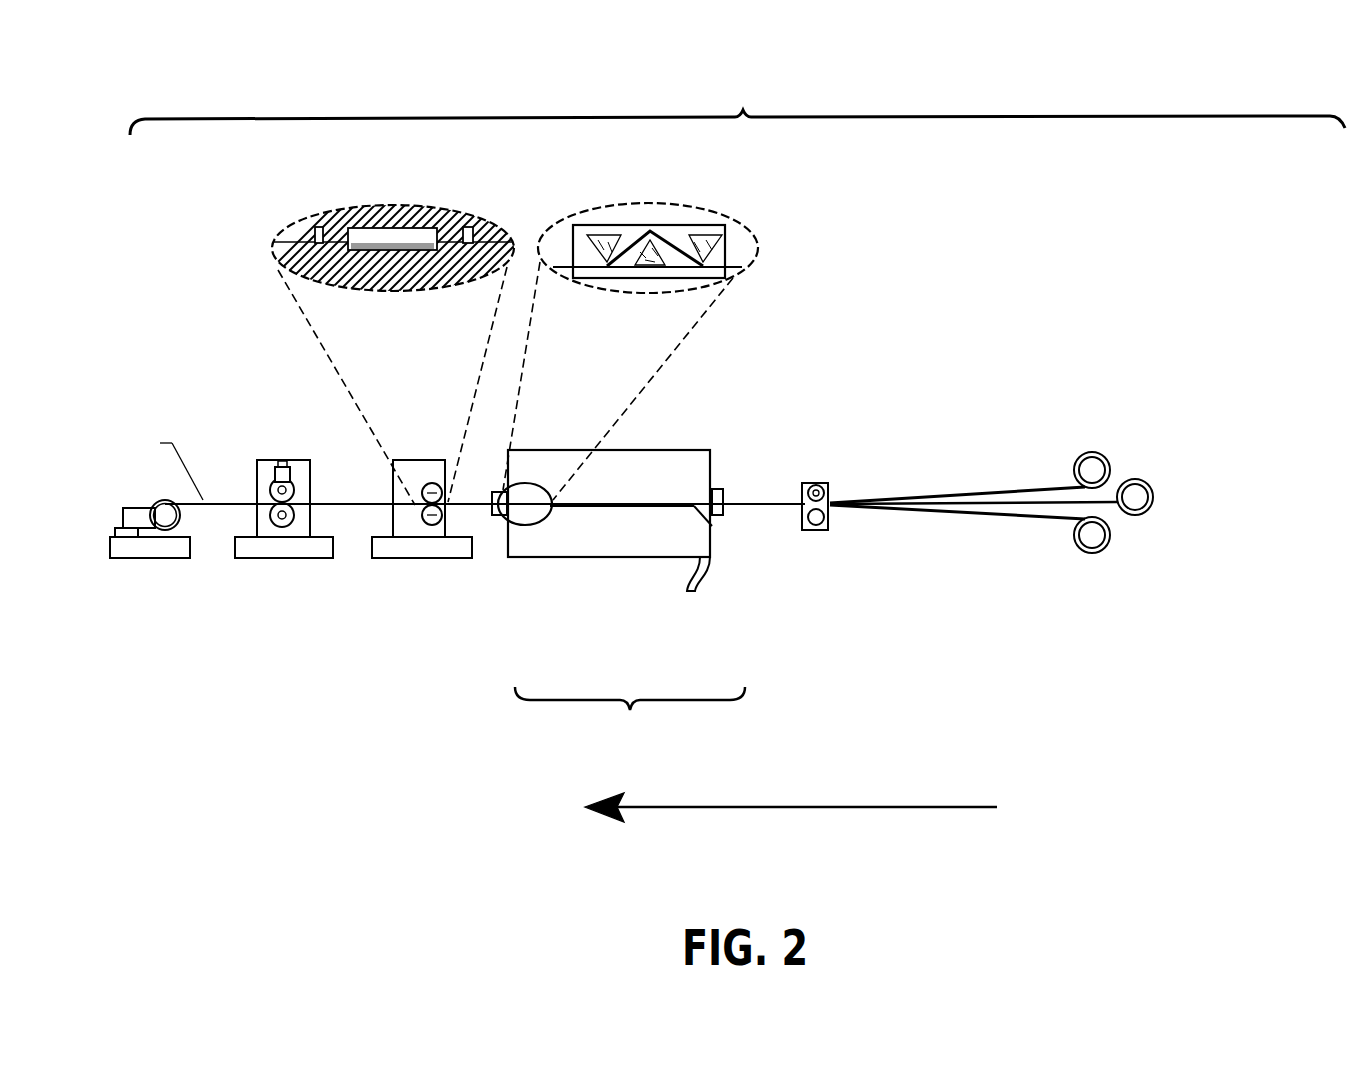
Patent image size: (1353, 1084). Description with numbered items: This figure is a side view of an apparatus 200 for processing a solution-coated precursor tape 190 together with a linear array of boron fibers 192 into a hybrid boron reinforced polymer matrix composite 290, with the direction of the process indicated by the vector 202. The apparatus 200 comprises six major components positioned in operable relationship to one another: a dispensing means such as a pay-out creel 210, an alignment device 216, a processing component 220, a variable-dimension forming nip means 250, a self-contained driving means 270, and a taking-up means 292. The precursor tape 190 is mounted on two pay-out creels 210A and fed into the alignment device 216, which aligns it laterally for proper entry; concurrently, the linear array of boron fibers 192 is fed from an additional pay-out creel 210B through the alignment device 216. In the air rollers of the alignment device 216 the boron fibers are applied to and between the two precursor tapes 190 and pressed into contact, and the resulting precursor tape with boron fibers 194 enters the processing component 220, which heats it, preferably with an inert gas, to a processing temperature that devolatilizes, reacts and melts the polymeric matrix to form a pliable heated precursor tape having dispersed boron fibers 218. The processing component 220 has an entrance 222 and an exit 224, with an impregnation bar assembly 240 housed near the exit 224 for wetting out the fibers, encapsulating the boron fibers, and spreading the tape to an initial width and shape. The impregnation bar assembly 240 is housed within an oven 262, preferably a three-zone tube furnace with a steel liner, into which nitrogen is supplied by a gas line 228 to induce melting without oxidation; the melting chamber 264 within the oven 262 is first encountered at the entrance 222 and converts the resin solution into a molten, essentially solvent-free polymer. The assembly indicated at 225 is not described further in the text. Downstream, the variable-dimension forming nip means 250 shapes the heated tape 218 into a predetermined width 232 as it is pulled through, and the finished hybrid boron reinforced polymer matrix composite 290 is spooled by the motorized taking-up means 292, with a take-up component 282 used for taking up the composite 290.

The apparatus 200 is at (737, 106).
The vector 202 is at (791, 813).
The solution-coated precursor tape 190 is at (957, 499).
The linear array of boron fibers 192 is at (974, 555).
The precursor tape with boron fibers 194 is at (752, 551).
The pay-out creel 210 is at (1169, 485).
The pay-out creels 210A is at (1149, 485).
The additional pay-out creel 210B is at (1188, 444).
The alignment device 216 is at (789, 491).
The heated precursor tape having dispersed boron fibers 218 is at (664, 435).
The processing component 220 is at (630, 717).
The entrance 222 is at (765, 460).
The exit 224 is at (509, 565).
The extruder assembly 225 is at (752, 661).
The gas line 228 is at (733, 590).
The predetermined width 232 is at (400, 248).
The impregnation bar assembly 240 is at (670, 224).
The variable-dimension forming nip means 250 is at (422, 529).
The oven 262 is at (604, 523).
The melting chamber 264 is at (659, 541).
The self-contained driving means 270 is at (296, 529).
The take-up component 282 is at (179, 549).
The taking-up means 292 is at (179, 549).
The hybrid boron reinforced polymer matrix composite 290 is at (156, 465).